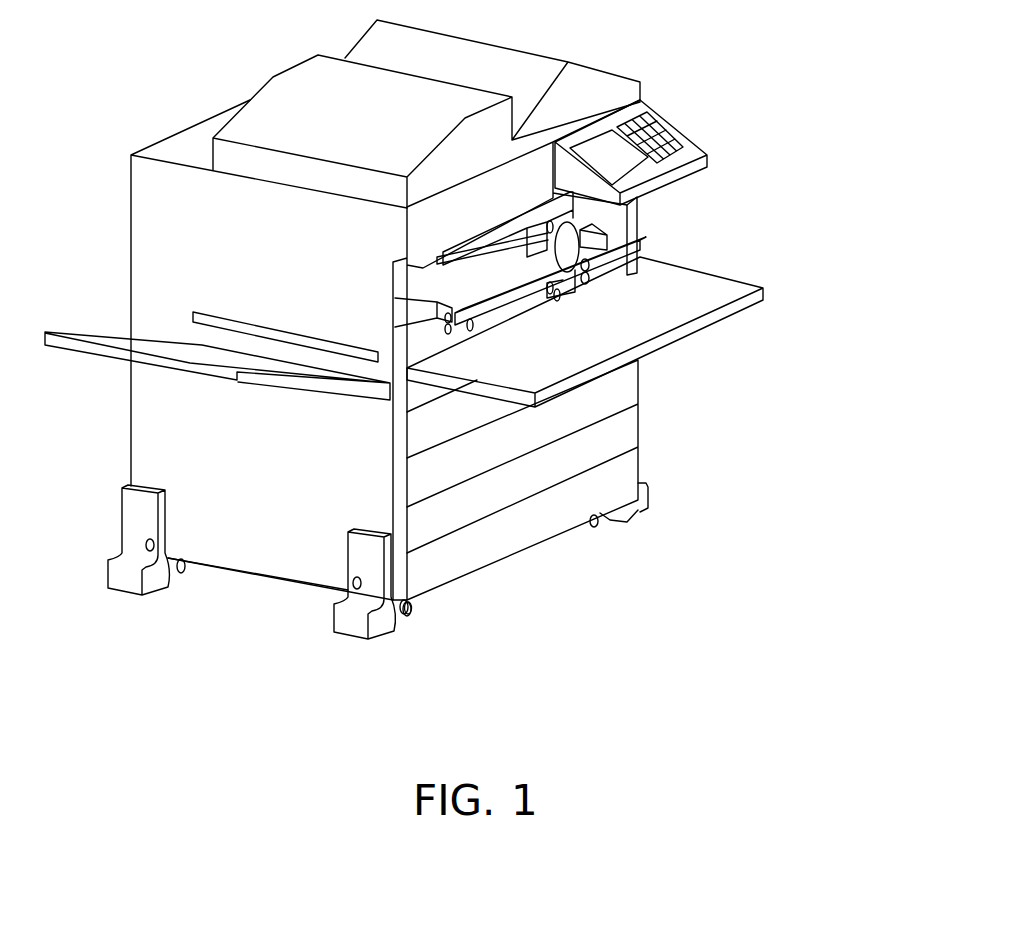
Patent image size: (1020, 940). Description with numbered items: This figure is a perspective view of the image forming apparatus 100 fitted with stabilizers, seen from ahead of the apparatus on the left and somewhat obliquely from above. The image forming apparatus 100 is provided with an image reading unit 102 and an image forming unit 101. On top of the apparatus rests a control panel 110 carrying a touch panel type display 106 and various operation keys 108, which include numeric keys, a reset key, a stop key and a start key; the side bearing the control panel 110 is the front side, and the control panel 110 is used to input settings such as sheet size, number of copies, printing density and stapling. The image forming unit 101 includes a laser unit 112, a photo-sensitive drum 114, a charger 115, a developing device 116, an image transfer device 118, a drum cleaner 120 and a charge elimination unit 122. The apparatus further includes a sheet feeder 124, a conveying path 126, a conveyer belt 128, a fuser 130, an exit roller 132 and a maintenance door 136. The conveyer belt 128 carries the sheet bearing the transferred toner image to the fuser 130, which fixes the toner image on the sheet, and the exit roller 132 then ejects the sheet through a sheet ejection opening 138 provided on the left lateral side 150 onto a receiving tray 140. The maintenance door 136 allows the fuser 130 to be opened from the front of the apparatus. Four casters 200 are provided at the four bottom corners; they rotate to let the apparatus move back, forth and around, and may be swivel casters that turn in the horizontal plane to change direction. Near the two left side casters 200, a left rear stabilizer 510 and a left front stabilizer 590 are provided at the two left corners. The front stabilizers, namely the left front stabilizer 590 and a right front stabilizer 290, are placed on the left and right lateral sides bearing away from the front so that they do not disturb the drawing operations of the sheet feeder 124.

The image forming apparatus 100 is at (205, 92).
The image forming unit 101 is at (795, 193).
The image reading unit 102 is at (557, 108).
The touch panel type display 106 is at (598, 147).
The operation keys 108 is at (657, 135).
The control panel 110 is at (700, 33).
The laser unit 112 is at (627, 203).
The photo-sensitive drum 114 is at (600, 240).
The charger 115 is at (637, 215).
The developing device 116 is at (615, 275).
The image transfer device 118 is at (556, 310).
The drum cleaner 120 is at (573, 310).
The charge elimination unit 122 is at (580, 247).
The sheet feeder 124 is at (483, 553).
The conveying path 126 is at (627, 277).
The conveyer belt 128 is at (570, 292).
The fuser 130 is at (550, 290).
The exit roller 132 is at (465, 300).
The maintenance door 136 is at (717, 317).
The sheet ejection opening 138 is at (285, 323).
The receiving tray 140 is at (155, 343).
The left lateral side 150 is at (272, 552).
The casters 200 is at (410, 612).
The right front stabilizer 290 is at (648, 500).
The left rear stabilizer 510 is at (125, 577).
The left front stabilizer 590 is at (378, 623).